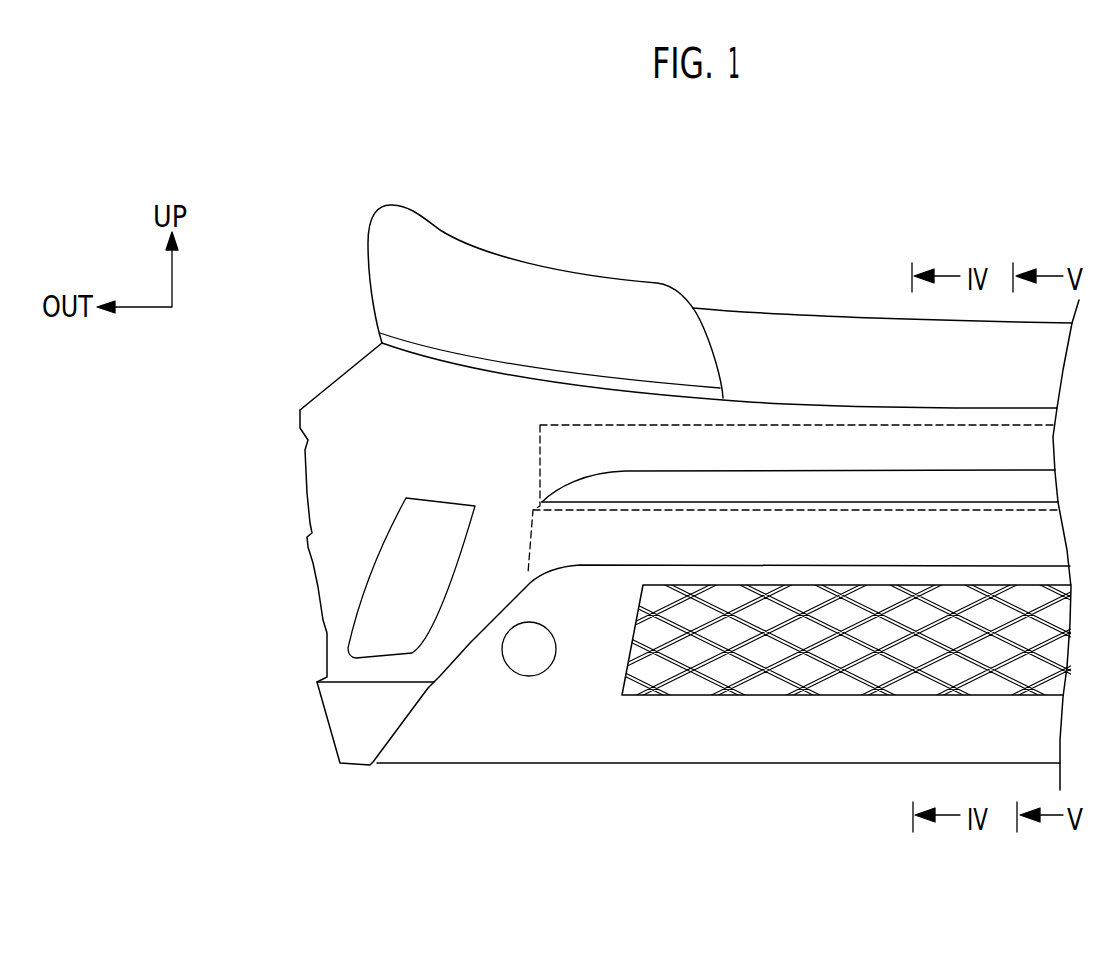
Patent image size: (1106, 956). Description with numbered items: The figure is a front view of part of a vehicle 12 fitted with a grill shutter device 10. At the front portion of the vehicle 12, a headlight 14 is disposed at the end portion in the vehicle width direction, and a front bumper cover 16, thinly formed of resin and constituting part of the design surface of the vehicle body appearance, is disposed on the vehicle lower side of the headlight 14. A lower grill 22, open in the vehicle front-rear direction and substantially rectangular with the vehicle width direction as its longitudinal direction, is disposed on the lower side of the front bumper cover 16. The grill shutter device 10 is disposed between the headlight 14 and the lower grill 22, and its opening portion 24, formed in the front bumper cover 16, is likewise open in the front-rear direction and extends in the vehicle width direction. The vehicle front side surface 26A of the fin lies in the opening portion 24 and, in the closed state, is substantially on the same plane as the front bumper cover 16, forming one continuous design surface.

The grill shutter device 10 is at (538, 460).
The vehicle 12 is at (296, 228).
The headlight 14 is at (565, 285).
The front bumper cover 16 is at (335, 378).
The lower grill 22 is at (662, 593).
The opening portion 24 is at (690, 478).
The vehicle front side surface of the fin 26A is at (853, 487).